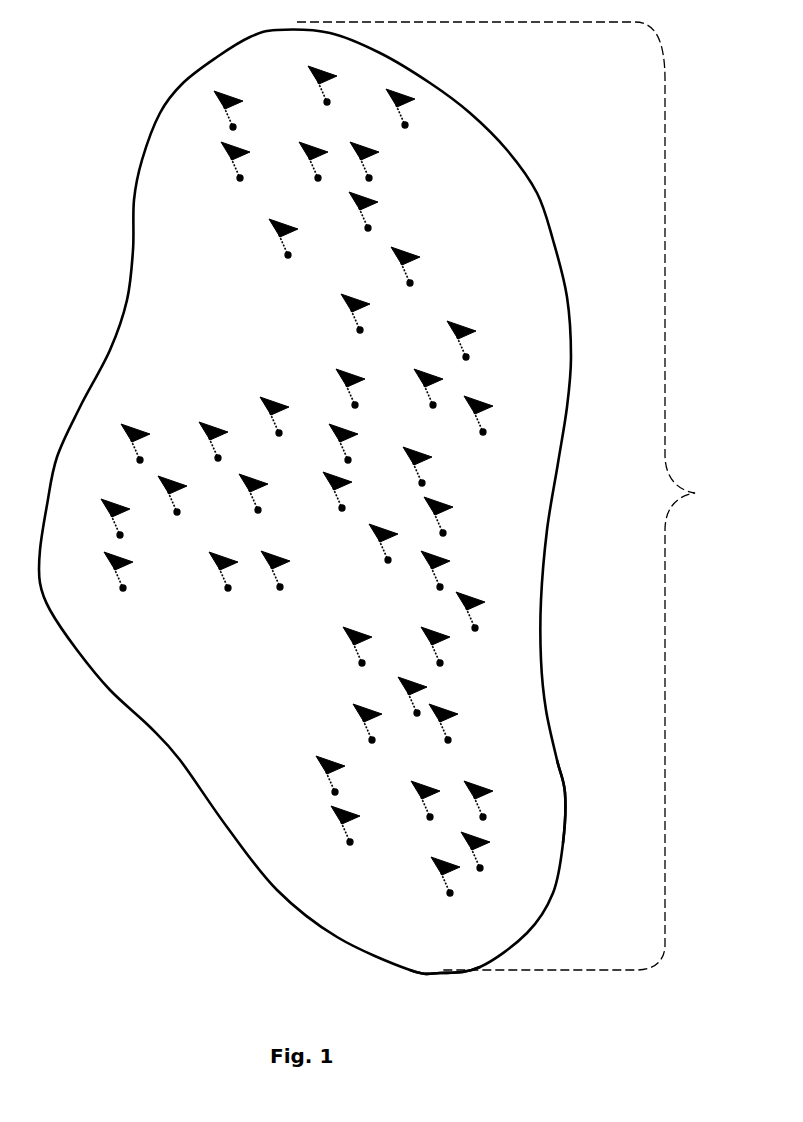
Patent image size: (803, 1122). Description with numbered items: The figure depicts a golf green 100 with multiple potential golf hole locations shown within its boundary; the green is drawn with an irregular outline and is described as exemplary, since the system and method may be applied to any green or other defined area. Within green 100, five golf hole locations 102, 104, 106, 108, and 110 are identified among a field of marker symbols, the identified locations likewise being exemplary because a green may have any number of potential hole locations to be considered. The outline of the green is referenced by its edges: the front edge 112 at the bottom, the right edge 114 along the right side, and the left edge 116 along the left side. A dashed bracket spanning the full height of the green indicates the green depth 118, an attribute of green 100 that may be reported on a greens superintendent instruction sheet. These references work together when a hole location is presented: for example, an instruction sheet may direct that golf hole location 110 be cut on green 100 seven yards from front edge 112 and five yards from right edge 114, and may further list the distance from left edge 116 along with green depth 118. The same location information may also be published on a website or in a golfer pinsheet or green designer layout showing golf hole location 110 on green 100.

The green 100 is at (108, 133).
The golf hole location 102 is at (177, 523).
The golf hole location 104 is at (298, 159).
The golf hole location 106 is at (379, 223).
The golf hole location 108 is at (498, 422).
The golf hole location 110 is at (429, 819).
The front edge 112 is at (445, 992).
The right edge 114 is at (574, 814).
The left edge 116 is at (221, 830).
The green depth 118 is at (520, 496).